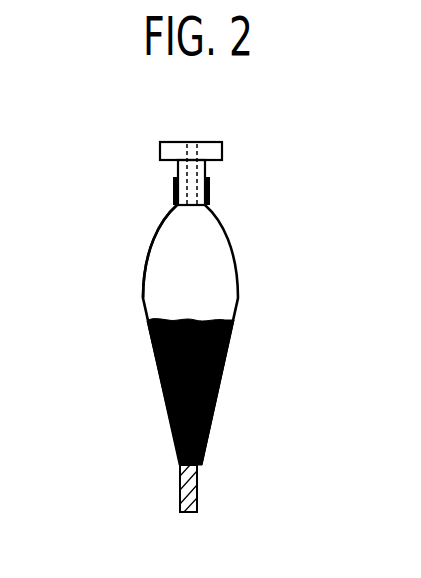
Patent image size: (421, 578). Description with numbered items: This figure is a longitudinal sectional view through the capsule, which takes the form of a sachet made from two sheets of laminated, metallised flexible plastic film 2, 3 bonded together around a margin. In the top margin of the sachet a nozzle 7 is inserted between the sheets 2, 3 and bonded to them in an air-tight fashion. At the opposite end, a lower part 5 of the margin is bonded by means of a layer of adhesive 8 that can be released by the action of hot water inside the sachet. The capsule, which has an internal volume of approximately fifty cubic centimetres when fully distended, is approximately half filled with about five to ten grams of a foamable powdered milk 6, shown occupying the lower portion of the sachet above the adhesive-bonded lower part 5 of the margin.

The flexible plastic film sheet 2 is at (227, 234).
The flexible plastic film sheet 3 is at (143, 290).
The lower part of the margin 5 is at (198, 490).
The foamable powdered milk 6 is at (157, 366).
The nozzle 7 is at (196, 142).
The layer of adhesive 8 is at (180, 476).